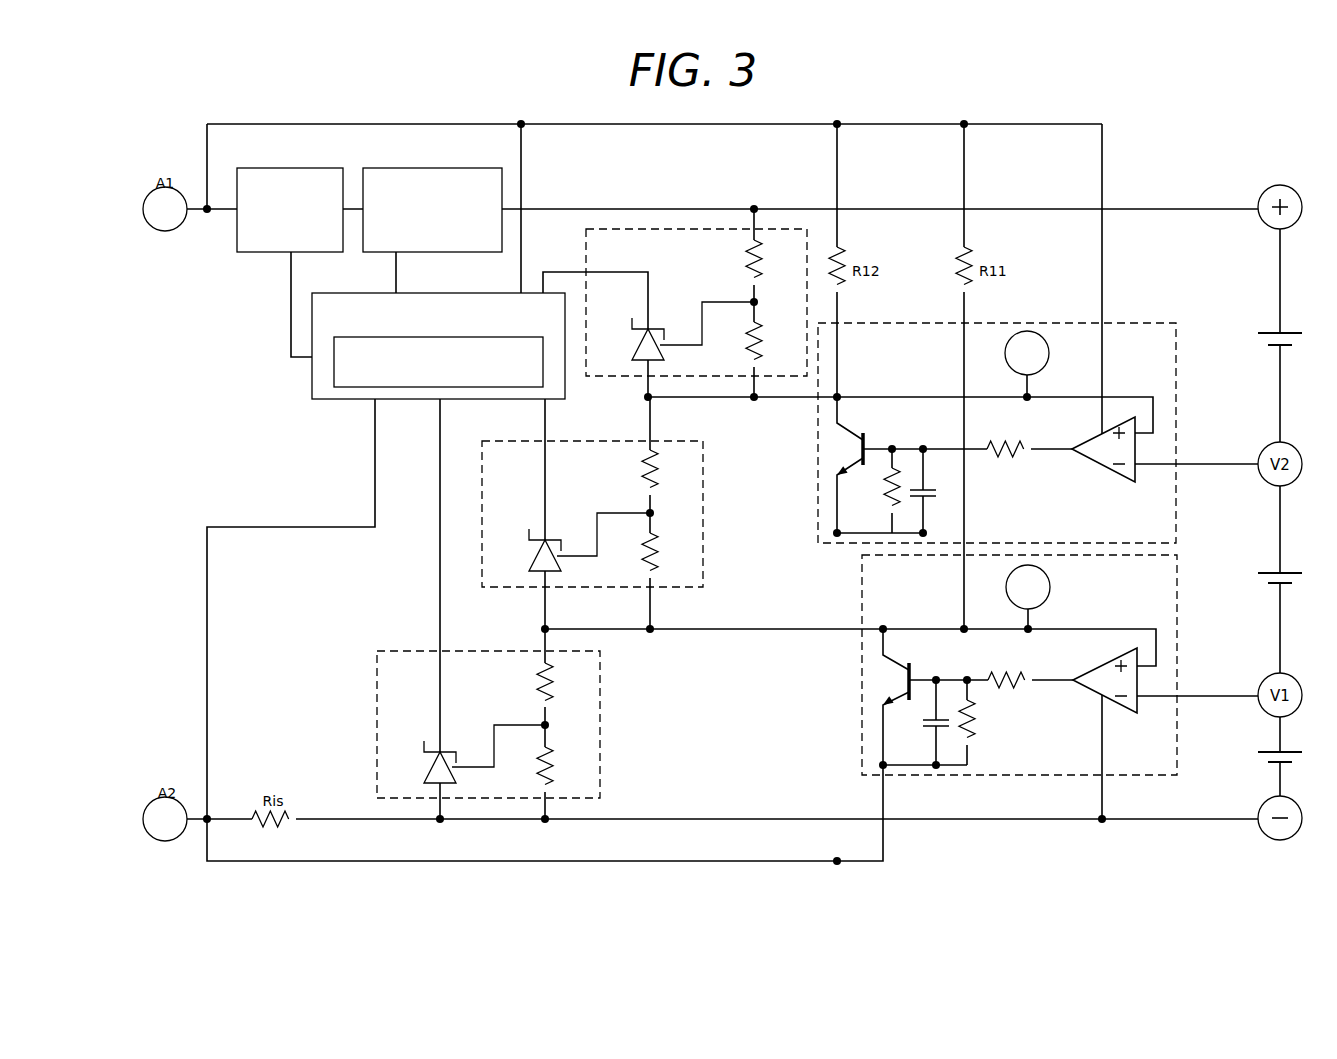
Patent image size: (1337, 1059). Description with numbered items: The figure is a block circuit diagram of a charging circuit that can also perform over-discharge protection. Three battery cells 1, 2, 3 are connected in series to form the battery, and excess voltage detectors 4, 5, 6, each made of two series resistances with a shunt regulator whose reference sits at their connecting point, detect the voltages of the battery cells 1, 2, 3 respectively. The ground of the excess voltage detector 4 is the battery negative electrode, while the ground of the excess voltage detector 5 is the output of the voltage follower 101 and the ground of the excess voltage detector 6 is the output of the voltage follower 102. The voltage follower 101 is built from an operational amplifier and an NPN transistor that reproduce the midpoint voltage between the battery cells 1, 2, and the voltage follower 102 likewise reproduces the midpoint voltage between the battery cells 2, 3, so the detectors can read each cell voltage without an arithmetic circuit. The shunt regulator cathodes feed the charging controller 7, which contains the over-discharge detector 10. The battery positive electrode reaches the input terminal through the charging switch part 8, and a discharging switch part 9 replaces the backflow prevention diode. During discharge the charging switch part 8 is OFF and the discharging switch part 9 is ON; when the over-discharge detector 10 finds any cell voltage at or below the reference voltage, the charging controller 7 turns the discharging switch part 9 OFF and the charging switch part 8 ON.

The battery cell 1 is at (1274, 752).
The battery cell 2 is at (1272, 573).
The battery cell 3 is at (1272, 334).
The excess voltage detector 4 is at (422, 652).
The excess voltage detector 5 is at (526, 441).
The excess voltage detector 6 is at (590, 250).
The charging controller 7 is at (370, 293).
The charging switch part 8 is at (296, 166).
The discharging switch part 9 is at (422, 166).
The over-discharge detector 10 is at (334, 368).
The voltage follower 101 is at (1178, 645).
The voltage follower 102 is at (1178, 418).